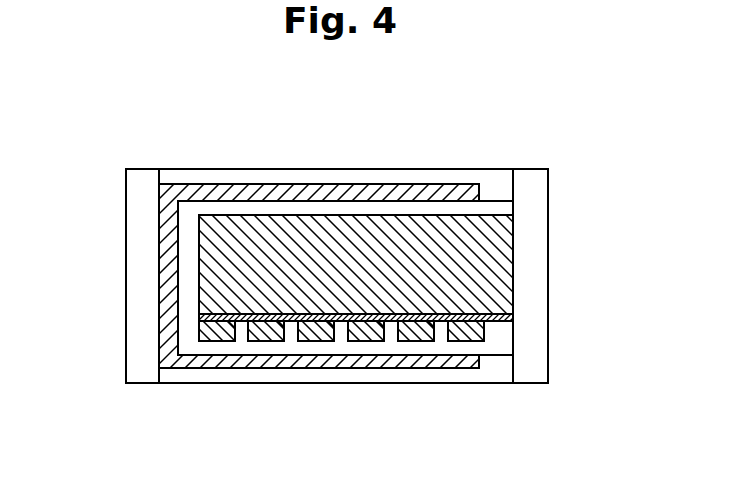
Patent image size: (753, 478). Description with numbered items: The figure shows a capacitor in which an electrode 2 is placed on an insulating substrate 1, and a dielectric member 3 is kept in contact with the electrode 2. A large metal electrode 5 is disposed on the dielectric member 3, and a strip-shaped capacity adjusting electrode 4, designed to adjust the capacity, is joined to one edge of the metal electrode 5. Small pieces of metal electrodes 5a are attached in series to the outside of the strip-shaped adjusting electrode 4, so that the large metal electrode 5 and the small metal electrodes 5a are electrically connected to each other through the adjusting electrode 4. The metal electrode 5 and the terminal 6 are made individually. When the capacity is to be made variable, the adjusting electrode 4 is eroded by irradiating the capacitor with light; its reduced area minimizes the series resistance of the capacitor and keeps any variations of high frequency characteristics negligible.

The insulating substrate 1 is at (212, 375).
The electrode 2 is at (232, 188).
The dielectric member 3 is at (255, 208).
The capacity adjusting electrode 4 is at (291, 322).
The metal electrode 5 is at (338, 255).
The small pieces of metal electrodes 5a is at (262, 334).
The terminal 6 is at (138, 273).